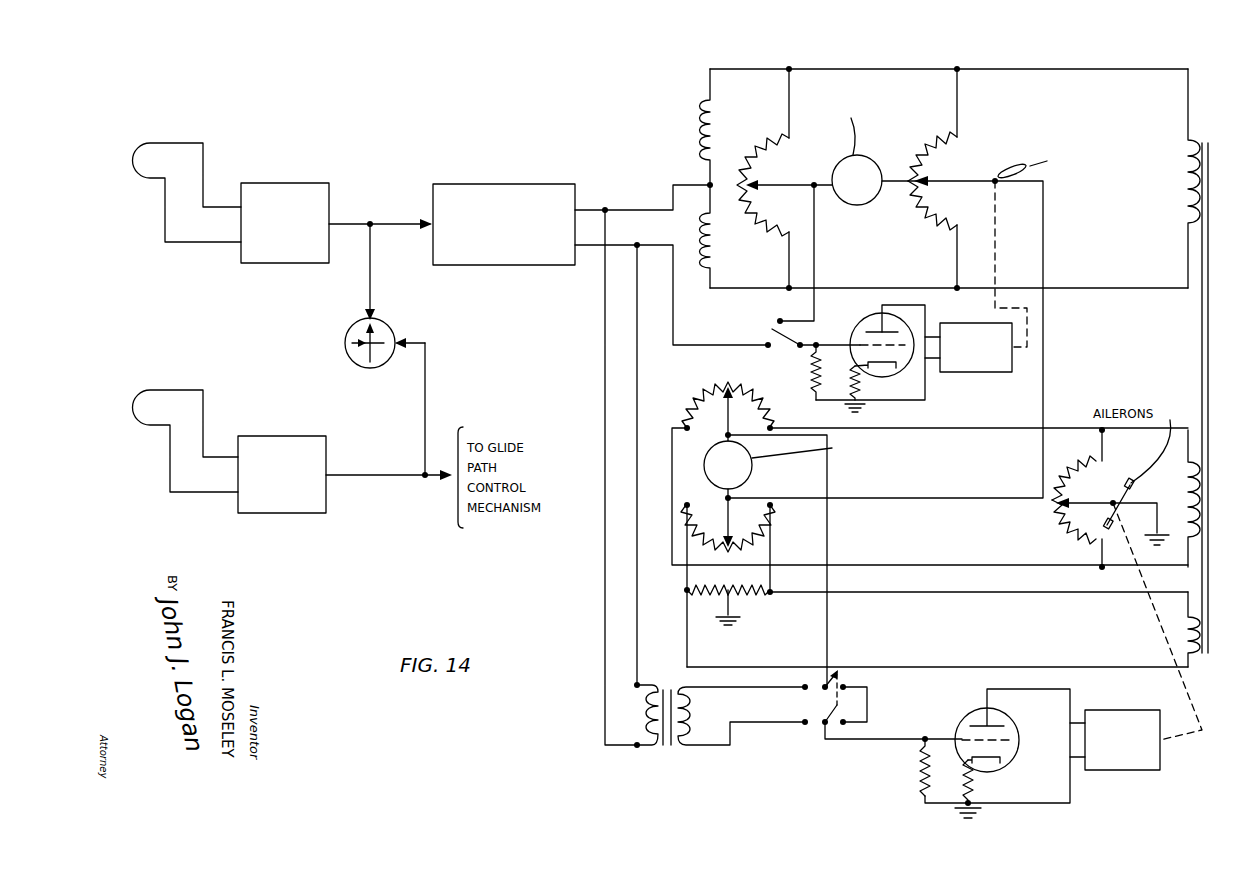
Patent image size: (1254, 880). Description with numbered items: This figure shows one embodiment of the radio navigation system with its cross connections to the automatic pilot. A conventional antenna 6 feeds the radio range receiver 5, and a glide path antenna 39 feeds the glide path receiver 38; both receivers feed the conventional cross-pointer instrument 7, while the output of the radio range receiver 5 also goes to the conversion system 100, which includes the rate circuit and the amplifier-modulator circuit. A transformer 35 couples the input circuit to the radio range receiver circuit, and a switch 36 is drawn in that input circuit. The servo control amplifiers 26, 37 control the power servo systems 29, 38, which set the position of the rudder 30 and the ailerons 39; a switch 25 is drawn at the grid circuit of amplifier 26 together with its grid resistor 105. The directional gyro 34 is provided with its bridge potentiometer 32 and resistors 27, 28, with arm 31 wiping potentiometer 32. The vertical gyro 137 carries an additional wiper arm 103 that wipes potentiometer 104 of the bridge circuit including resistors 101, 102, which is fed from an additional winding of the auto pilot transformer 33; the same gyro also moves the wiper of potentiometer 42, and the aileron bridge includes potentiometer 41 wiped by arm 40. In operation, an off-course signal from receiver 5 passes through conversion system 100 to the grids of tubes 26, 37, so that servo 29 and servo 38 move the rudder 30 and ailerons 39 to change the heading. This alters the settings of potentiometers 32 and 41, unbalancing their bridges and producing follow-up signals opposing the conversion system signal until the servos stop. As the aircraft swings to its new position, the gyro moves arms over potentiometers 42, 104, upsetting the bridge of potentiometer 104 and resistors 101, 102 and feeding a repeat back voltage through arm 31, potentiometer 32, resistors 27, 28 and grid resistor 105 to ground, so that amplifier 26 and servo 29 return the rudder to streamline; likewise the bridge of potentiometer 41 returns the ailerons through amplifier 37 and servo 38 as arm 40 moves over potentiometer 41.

The antenna 6 is at (180, 143).
The radio range receiver 5 is at (291, 183).
The conversion system 100 is at (497, 184).
The cross-pointer instrument 7 is at (385, 325).
The glide path antenna 39 is at (173, 390).
The glide path receiver 38 is at (286, 436).
The resistor 27 is at (720, 130).
The resistor 28 is at (720, 263).
The directional gyro 34 is at (868, 160).
The potentiometer 32 is at (936, 155).
The arm 31 is at (958, 183).
The rudder 30 is at (1018, 165).
The transformer 33 is at (1210, 345).
The servo control amplifier 26 is at (857, 327).
The switch 25 is at (783, 346).
The grid resistor 105 is at (812, 372).
The power servo system 29 is at (975, 375).
The potentiometer 42 is at (707, 388).
The vertical gyro 137 is at (752, 465).
The wiper or potentiometer arm 103 is at (727, 520).
The potentiometer 104 is at (762, 536).
The resistor 101 is at (697, 600).
The resistor 102 is at (752, 598).
The potentiometer arm 40 is at (1082, 500).
The potentiometer 41 is at (1062, 522).
The transformer 35 is at (668, 748).
The switch 36 is at (815, 740).
The servo control amplifier 37 is at (968, 712).